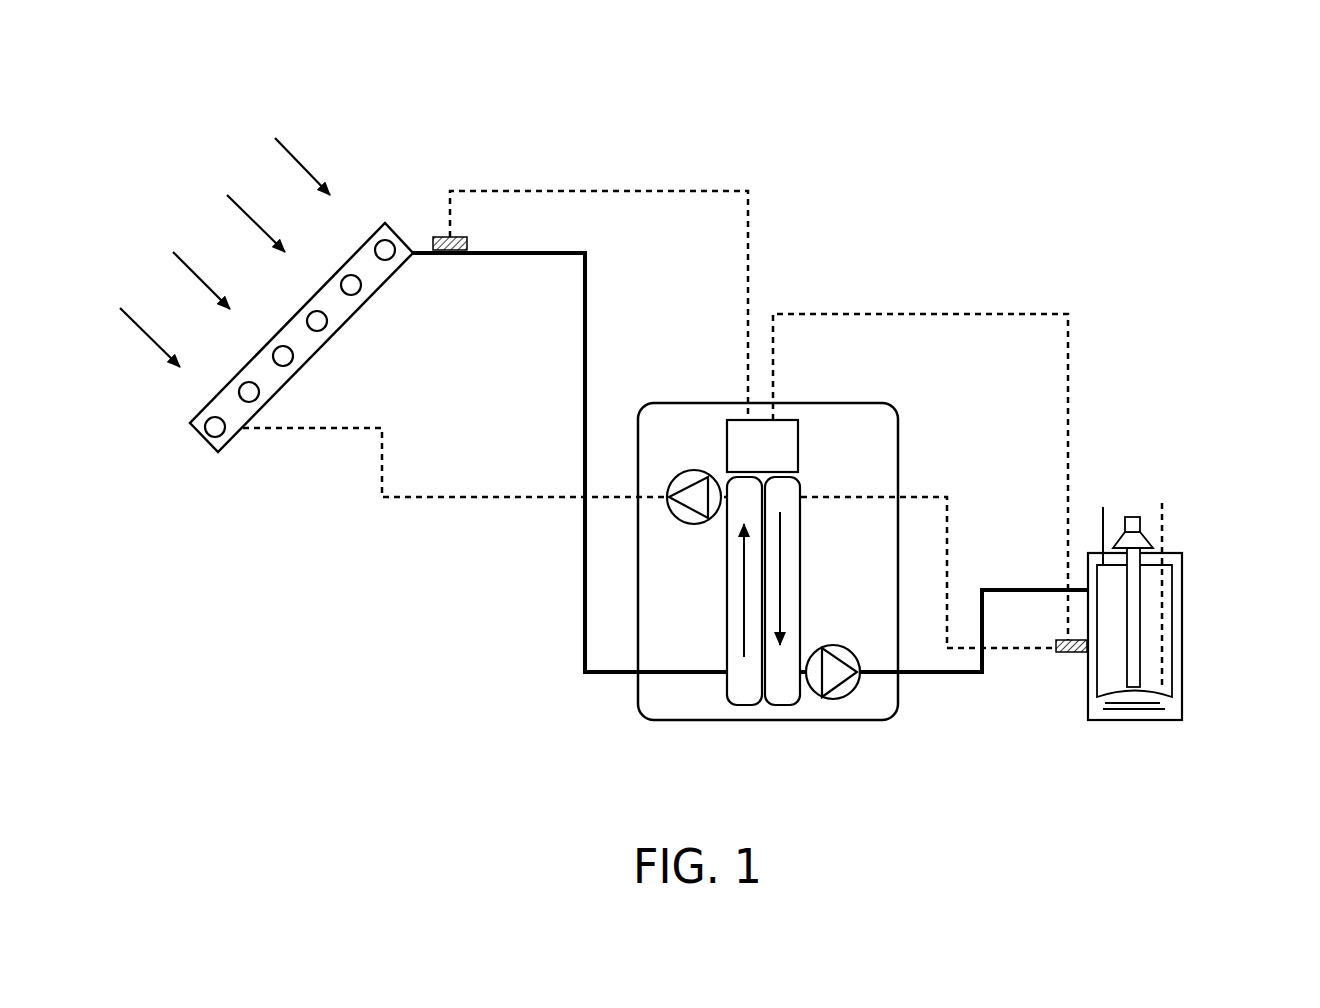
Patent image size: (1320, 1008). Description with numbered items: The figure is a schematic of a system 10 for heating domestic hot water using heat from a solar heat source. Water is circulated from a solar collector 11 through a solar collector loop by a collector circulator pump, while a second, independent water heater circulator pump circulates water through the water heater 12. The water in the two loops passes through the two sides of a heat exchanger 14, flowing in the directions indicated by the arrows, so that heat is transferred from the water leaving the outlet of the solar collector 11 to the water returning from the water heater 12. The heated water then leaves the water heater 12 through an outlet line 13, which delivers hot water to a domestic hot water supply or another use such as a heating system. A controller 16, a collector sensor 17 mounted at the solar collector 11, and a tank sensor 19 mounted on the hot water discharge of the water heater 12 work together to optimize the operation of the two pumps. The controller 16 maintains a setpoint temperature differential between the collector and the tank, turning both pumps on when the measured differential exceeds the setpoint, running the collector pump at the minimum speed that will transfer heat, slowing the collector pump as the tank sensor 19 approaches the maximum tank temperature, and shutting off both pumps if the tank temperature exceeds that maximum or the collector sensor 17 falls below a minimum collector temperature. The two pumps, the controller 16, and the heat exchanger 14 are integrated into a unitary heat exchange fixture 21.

The system 10 is at (980, 176).
The solar collector 11 is at (366, 123).
The water heater 12 is at (1204, 623).
The outlet line 13 is at (1103, 507).
The heat exchanger 14 is at (733, 690).
The controller 16 is at (743, 437).
The collector sensor 17 is at (437, 237).
The tank sensor 19 is at (1080, 653).
The unitary heat exchange fixture 21 is at (822, 379).